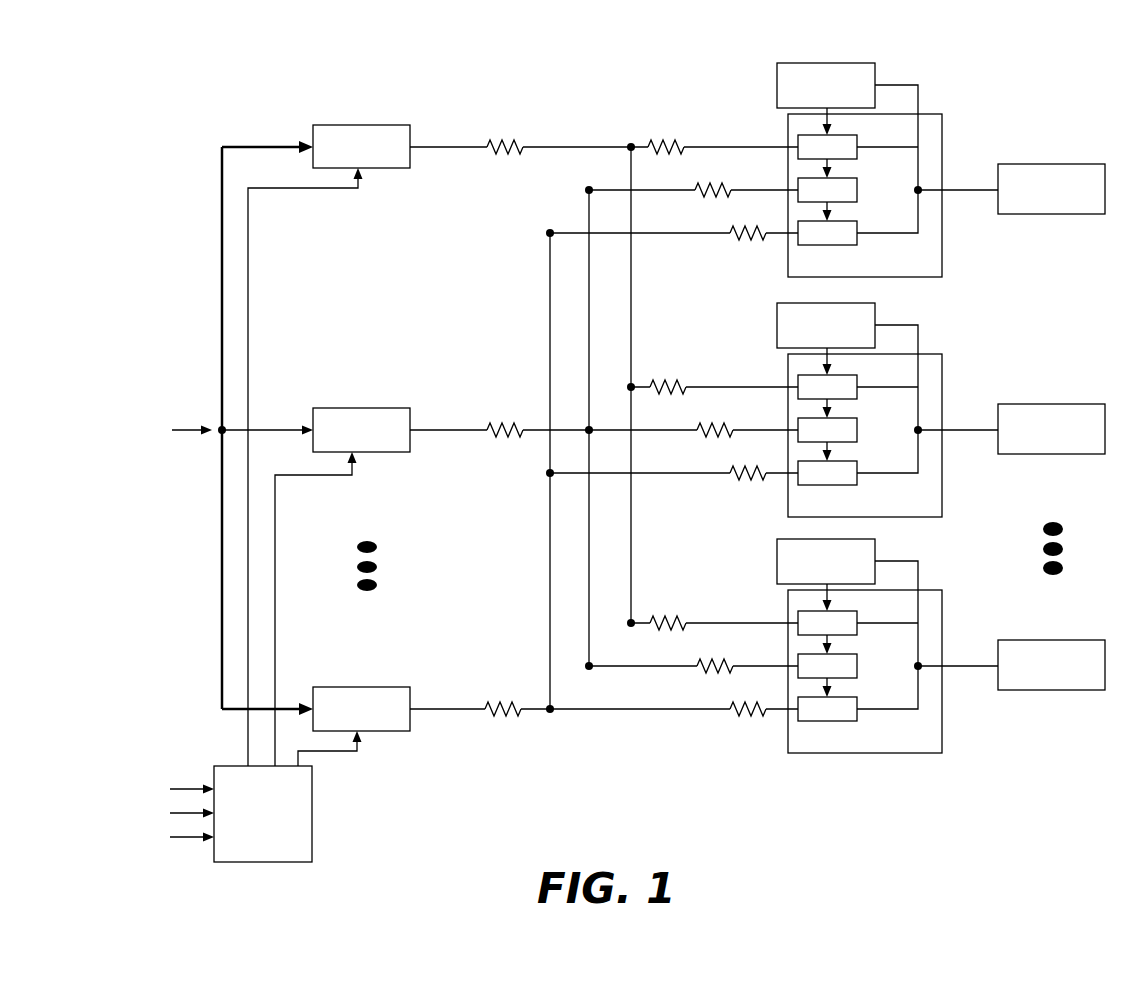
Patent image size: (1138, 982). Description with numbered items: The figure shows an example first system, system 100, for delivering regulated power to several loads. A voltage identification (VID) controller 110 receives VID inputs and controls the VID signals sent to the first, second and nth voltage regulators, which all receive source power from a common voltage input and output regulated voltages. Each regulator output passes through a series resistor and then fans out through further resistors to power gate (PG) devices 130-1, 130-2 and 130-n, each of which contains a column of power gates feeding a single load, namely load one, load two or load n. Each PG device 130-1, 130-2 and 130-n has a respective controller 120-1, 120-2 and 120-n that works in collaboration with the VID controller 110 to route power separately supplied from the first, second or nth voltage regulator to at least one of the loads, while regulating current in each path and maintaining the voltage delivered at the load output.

The system 100 is at (566, 462).
The voltage identification (VID) controller 110 is at (263, 814).
The controller 120-1 is at (826, 85).
The controller 120-2 is at (826, 325).
The controller 120-n is at (826, 561).
The power gate (PG) device 130-1 is at (865, 192).
The power gate (PG) device 130-2 is at (865, 432).
The power gate (PG) device 130-n is at (865, 668).